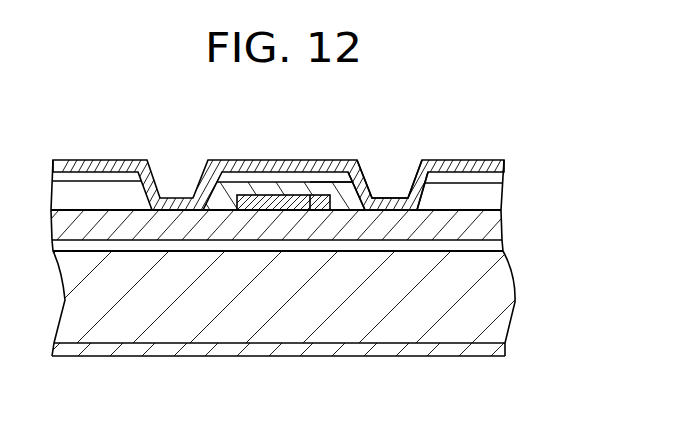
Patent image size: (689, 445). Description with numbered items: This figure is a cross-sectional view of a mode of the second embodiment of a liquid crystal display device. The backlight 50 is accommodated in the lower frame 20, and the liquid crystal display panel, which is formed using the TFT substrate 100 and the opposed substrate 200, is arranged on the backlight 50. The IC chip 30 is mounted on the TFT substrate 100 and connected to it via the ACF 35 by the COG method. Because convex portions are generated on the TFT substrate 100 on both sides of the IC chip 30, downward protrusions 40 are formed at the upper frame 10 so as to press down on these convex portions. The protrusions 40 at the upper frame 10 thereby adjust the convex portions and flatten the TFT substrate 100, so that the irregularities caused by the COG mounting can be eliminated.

The upper frame 10 is at (463, 165).
The lower frame 20 is at (348, 350).
The IC chip 30 is at (288, 198).
The ACF 35 is at (315, 185).
The downward protrusions 40 is at (369, 182).
The backlight 50 is at (282, 327).
The TFT substrate 100 is at (183, 216).
The opposed substrate 200 is at (231, 192).